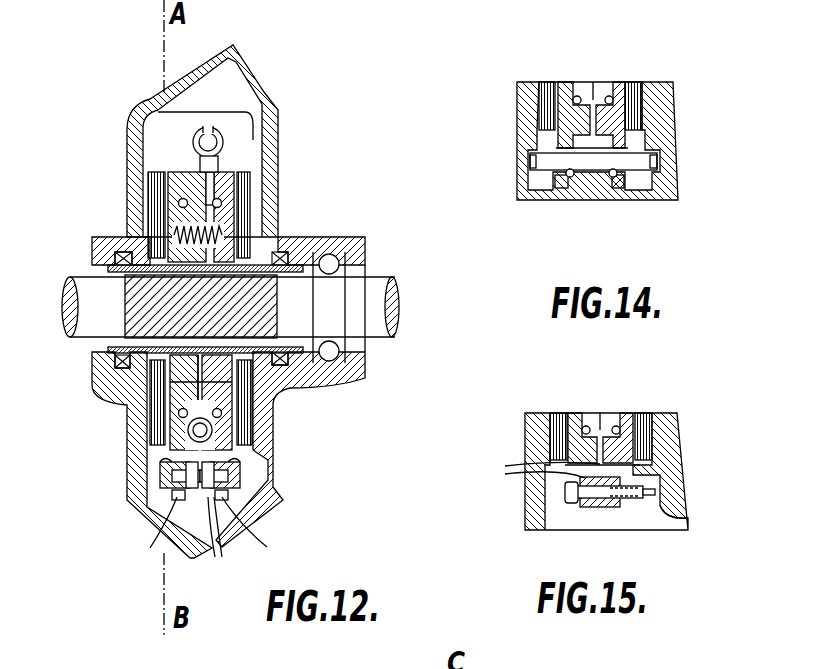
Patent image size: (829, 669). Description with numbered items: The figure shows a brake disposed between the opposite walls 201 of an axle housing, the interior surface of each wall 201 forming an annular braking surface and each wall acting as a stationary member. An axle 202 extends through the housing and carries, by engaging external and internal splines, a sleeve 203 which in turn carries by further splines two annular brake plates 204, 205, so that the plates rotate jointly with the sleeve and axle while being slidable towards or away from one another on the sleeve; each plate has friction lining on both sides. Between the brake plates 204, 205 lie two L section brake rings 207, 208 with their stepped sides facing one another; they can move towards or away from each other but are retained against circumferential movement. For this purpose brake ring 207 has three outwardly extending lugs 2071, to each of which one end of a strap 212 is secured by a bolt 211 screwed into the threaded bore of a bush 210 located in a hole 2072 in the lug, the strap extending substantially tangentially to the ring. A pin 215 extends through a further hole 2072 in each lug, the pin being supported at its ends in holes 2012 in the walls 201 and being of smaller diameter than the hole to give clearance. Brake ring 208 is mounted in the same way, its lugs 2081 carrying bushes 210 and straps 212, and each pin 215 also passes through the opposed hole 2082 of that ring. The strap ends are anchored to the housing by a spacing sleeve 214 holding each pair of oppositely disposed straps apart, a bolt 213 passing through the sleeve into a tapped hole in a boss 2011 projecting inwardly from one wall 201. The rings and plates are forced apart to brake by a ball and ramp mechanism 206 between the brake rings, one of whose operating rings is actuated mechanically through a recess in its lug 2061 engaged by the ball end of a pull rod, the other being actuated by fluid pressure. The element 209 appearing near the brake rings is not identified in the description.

In FIG. 12, the wall of axle housing 201 is at (232, 93).
In FIG. 14, the wall of axle housing 201 is at (530, 102).
In FIG. 15, the wall of axle housing 201 is at (680, 507).
In FIG. 15, the boss 2011 is at (650, 510).
In FIG. 14, the hole in housing wall 2012 is at (690, 142).
In FIG. 12, the axle 202 is at (85, 305).
In FIG. 12, the sleeve 203 is at (140, 260).
In FIG. 12, the brake plate 204 is at (157, 186).
In FIG. 12, the brake plate 205 is at (246, 183).
In FIG. 12, the ball and ramp mechanism 206 is at (193, 133).
In FIG. 12, the lug of operating ring 2061 is at (200, 130).
In FIG. 12, the brake ring 207 is at (185, 178).
In FIG. 14, the brake ring 207 is at (578, 90).
In FIG. 15, the brake ring 207 is at (583, 420).
In FIG. 12, the lug 2071 is at (173, 500).
In FIG. 14, the lug 2071 is at (562, 187).
In FIG. 12, the hole in lug 2072 is at (162, 458).
In FIG. 14, the hole in lug 2072 is at (572, 178).
In FIG. 12, the brake ring 208 is at (228, 217).
In FIG. 14, the brake ring 208 is at (612, 90).
In FIG. 15, the brake ring 208 is at (620, 420).
In FIG. 12, the lug 2081 is at (245, 500).
In FIG. 14, the lug 2081 is at (615, 187).
In FIG. 12, the hole in lug 2082 is at (243, 455).
In FIG. 14, the hole in lug 2082 is at (612, 178).
In FIG. 12, the spring 209 is at (222, 235).
In FIG. 12, the bush 210 is at (163, 480).
In FIG. 12, the bolt 211 is at (219, 504).
In FIG. 12, the strap 212 is at (210, 541).
In FIG. 15, the strap 212 is at (532, 469).
In FIG. 15, the bolt 213 is at (565, 492).
In FIG. 15, the spacing sleeve 214 is at (595, 507).
In FIG. 14, the pin 215 is at (548, 160).